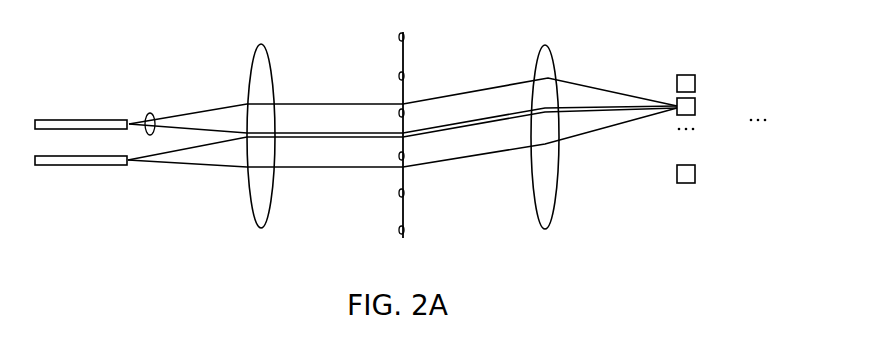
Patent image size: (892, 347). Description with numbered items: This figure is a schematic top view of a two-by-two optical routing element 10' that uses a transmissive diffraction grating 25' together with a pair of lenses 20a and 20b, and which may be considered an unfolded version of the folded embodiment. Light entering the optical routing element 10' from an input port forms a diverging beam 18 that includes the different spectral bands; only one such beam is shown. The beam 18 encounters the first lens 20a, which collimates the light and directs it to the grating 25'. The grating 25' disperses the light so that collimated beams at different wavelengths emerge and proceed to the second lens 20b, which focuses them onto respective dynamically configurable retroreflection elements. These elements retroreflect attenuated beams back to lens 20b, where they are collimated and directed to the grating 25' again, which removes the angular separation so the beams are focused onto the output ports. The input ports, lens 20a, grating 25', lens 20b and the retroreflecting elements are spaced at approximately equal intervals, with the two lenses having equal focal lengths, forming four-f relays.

The optical routing element 10' is at (127, 288).
The beam 18 is at (148, 113).
The first lens 20a is at (247, 60).
The second lens 20b is at (531, 190).
The transmissive diffraction grating 25' is at (426, 124).